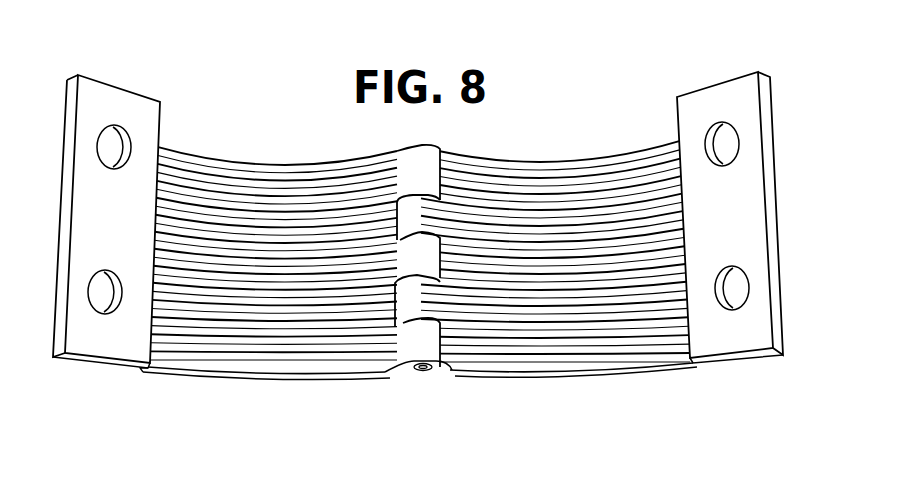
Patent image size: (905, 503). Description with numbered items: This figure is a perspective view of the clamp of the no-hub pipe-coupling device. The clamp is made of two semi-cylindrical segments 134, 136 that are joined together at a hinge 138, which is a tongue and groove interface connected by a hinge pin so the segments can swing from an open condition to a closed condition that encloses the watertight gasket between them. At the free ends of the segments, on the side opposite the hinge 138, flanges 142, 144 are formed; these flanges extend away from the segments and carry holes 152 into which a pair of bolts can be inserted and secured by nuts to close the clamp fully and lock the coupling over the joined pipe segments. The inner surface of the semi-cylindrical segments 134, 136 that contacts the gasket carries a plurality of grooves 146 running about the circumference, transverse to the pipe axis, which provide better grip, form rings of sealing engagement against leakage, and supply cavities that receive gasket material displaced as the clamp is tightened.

The semi-cylindrical segment 134 is at (210, 373).
The semi-cylindrical segment 136 is at (563, 373).
The hinge 138 is at (423, 393).
The flange 142 is at (115, 366).
The flange 144 is at (720, 365).
The grooves 146 is at (305, 348).
The holes 152 is at (112, 143).